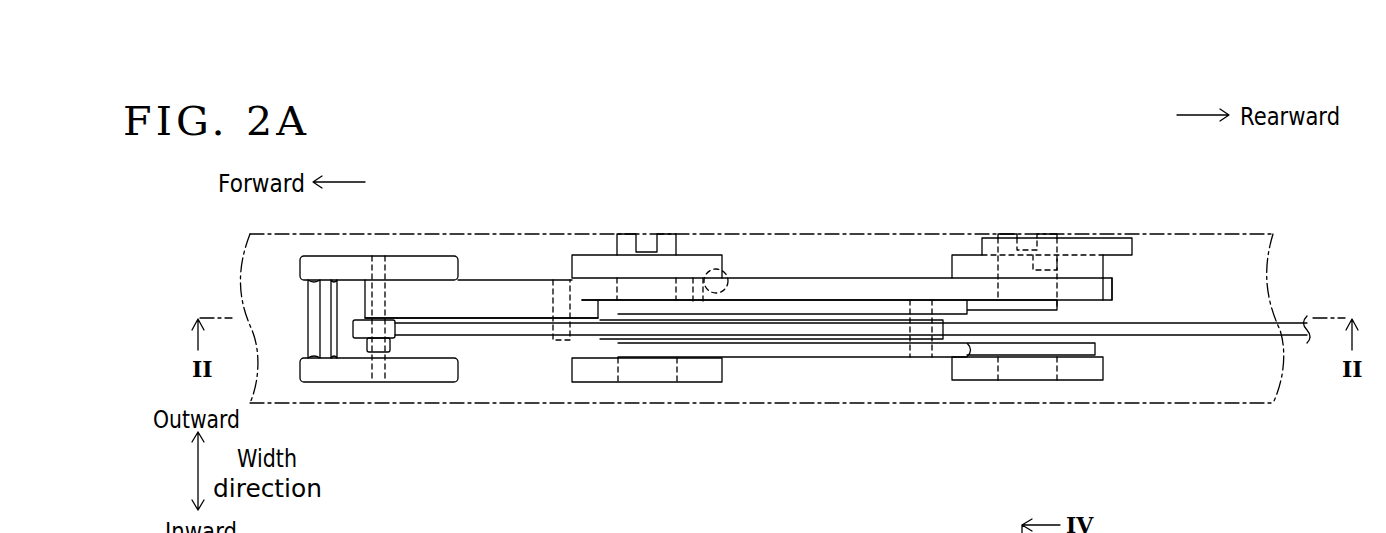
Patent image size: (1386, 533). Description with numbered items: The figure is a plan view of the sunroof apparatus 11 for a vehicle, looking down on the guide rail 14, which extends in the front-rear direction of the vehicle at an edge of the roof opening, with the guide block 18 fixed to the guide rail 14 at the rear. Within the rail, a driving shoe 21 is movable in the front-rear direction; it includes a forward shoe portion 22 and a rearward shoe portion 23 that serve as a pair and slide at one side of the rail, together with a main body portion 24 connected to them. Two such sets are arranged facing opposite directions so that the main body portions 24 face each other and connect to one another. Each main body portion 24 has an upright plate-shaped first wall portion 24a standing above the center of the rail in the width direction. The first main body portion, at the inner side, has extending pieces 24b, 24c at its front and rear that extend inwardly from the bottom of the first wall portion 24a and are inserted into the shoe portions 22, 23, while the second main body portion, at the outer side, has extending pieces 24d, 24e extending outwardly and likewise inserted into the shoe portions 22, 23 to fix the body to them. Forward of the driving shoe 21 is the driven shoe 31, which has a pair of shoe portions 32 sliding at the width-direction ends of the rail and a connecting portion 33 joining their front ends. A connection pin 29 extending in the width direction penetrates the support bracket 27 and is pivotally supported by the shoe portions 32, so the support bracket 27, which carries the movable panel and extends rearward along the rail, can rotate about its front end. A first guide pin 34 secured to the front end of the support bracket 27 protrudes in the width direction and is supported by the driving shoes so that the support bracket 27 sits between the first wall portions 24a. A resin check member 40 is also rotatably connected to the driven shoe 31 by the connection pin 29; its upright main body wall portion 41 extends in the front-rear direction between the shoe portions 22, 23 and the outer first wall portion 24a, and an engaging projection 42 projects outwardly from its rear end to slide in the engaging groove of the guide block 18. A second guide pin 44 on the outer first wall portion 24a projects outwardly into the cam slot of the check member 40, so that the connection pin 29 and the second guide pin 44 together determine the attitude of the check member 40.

The sunroof apparatus 11 is at (1183, 201).
The guide rail 14 is at (1220, 403).
The guide block 18 is at (1098, 266).
The driving shoe 21 is at (790, 301).
The shoe portion 22 is at (590, 262).
The shoe portion 23 is at (965, 262).
The main body portion 24 is at (815, 300).
The first wall portion 24a is at (903, 300).
The extending piece 24b is at (686, 372).
The extending piece 24c is at (1057, 367).
The extending piece 24d is at (624, 233).
The extending piece 24e is at (1003, 238).
The support bracket 27 is at (1213, 322).
The connection pin 29 is at (369, 268).
The driven shoe 31 is at (434, 262).
The shoe portion 32 is at (324, 262).
The connecting portion 33 is at (307, 312).
The first guide pin 34 is at (942, 347).
The check member 40 is at (540, 274).
The main body wall portion 41 is at (858, 286).
The engaging projection 42 is at (1068, 240).
The second guide pin 44 is at (727, 275).